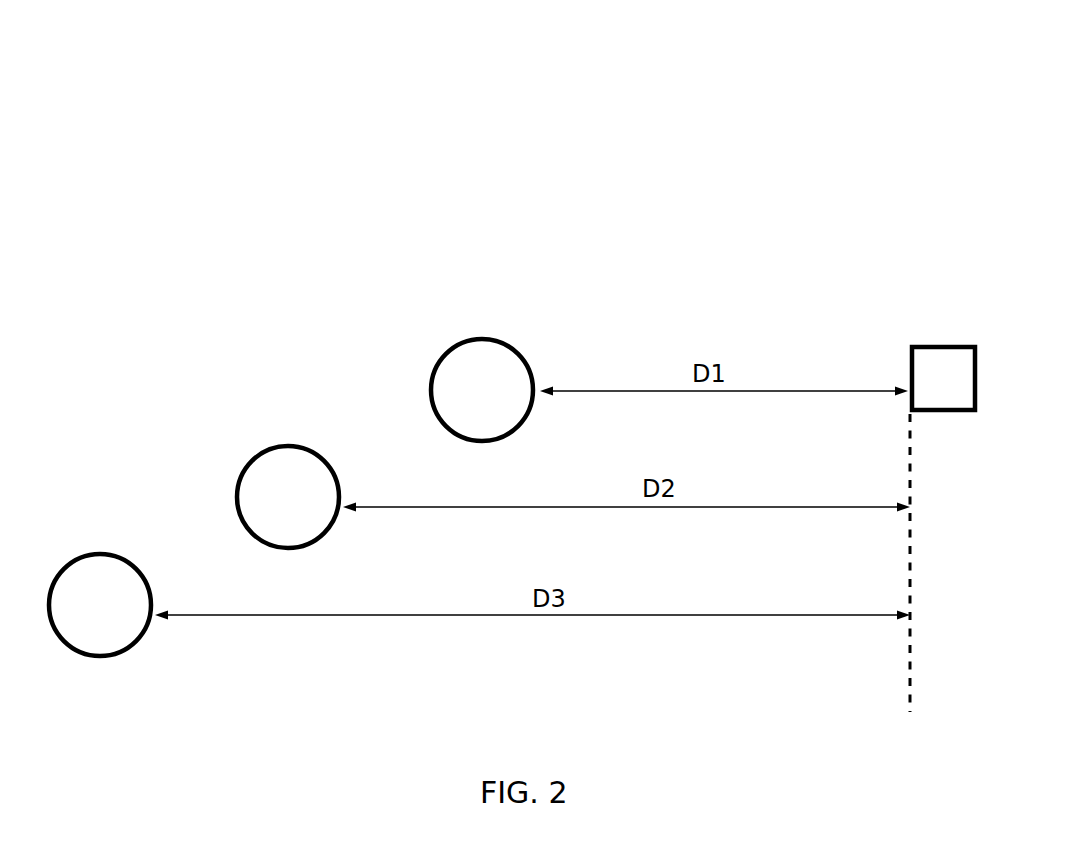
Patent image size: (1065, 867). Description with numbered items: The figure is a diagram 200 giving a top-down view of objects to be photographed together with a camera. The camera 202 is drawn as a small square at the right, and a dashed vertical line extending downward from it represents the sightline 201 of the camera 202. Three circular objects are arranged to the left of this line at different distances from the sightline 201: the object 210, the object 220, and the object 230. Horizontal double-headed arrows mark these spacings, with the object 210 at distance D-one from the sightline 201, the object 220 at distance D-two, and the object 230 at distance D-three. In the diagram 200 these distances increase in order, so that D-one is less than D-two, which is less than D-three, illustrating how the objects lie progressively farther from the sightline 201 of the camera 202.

The diagram 200 is at (870, 68).
The sightline 201 is at (911, 547).
The camera 202 is at (943, 352).
The object 210 is at (86, 572).
The object 220 is at (268, 462).
The object 230 is at (476, 352).